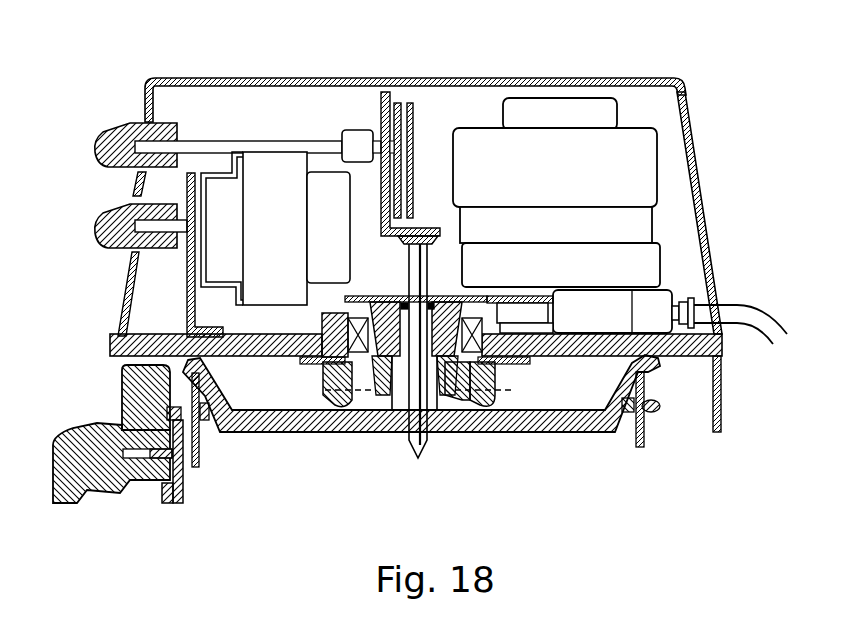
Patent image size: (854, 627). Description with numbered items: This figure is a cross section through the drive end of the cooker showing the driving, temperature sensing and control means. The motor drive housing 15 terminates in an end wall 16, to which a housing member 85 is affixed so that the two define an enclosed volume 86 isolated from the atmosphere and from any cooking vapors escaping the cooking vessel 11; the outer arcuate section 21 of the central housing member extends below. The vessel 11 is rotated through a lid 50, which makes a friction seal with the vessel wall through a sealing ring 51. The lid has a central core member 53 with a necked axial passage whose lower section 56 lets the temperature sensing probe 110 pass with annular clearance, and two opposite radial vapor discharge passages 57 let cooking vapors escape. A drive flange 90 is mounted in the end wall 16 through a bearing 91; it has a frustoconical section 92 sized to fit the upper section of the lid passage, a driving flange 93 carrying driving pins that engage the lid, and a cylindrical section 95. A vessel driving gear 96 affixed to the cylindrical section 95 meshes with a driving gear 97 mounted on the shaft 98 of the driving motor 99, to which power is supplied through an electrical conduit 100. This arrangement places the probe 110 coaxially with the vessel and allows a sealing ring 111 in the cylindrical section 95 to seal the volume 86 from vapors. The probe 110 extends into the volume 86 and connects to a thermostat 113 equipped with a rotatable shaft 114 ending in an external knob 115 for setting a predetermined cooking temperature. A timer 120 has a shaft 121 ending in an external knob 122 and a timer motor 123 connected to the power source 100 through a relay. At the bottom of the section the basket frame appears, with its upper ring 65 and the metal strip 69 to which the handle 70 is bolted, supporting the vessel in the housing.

The cooking vessel 11 is at (198, 453).
The motor drive housing 15 is at (436, 184).
The end wall 16 is at (727, 339).
The outer arcuate section 21 is at (722, 401).
The lid 50 is at (421, 417).
The sealing ring 51 is at (205, 430).
The central core member 53 is at (539, 424).
The lower section 56 is at (435, 418).
The radial vapor discharge passages 57 is at (500, 394).
The upper ring 65 is at (160, 404).
The metal strip 69 is at (186, 493).
The handle 70 is at (85, 437).
The housing member 85 is at (702, 206).
The enclosed volume 86 is at (448, 107).
The drive flange 90 is at (317, 370).
The bearing 91 is at (548, 322).
The frustoconical section 92 is at (466, 404).
The driving flange 93 is at (530, 360).
The cylindrical section 95 is at (340, 318).
The vessel driving gear 96 is at (378, 296).
The driving gear 97 is at (540, 306).
The shaft 98 is at (510, 297).
The driving motor 99 is at (563, 179).
The electrical conduit 100 is at (736, 310).
The temperature sensing probe 110 is at (407, 333).
The sealing ring 111 is at (428, 300).
The thermostat 113 is at (402, 100).
The rotatable shaft 114 is at (268, 148).
The external knob 115 is at (115, 120).
The timer 120 is at (218, 200).
The shaft 121 is at (148, 227).
The external knob 122 is at (112, 240).
The timer motor 123 is at (255, 233).